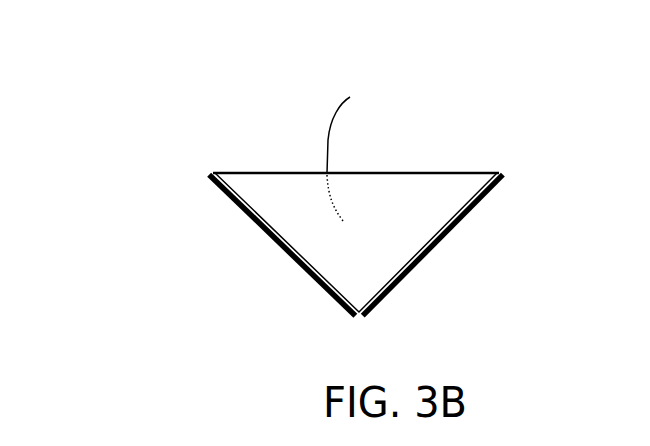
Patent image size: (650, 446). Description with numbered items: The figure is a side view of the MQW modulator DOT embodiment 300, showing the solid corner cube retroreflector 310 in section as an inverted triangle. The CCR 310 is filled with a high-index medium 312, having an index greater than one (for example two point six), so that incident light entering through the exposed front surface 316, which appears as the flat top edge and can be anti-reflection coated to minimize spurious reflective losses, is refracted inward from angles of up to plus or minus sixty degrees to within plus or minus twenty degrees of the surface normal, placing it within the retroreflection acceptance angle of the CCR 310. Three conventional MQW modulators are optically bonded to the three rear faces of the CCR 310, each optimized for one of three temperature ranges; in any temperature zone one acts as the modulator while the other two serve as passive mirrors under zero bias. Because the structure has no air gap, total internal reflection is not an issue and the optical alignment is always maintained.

The MQW modulator DOT embodiment 300 is at (133, 70).
The corner cube retroreflector 310 is at (480, 172).
The medium 312 is at (318, 202).
The exposed front surface 316 is at (407, 173).